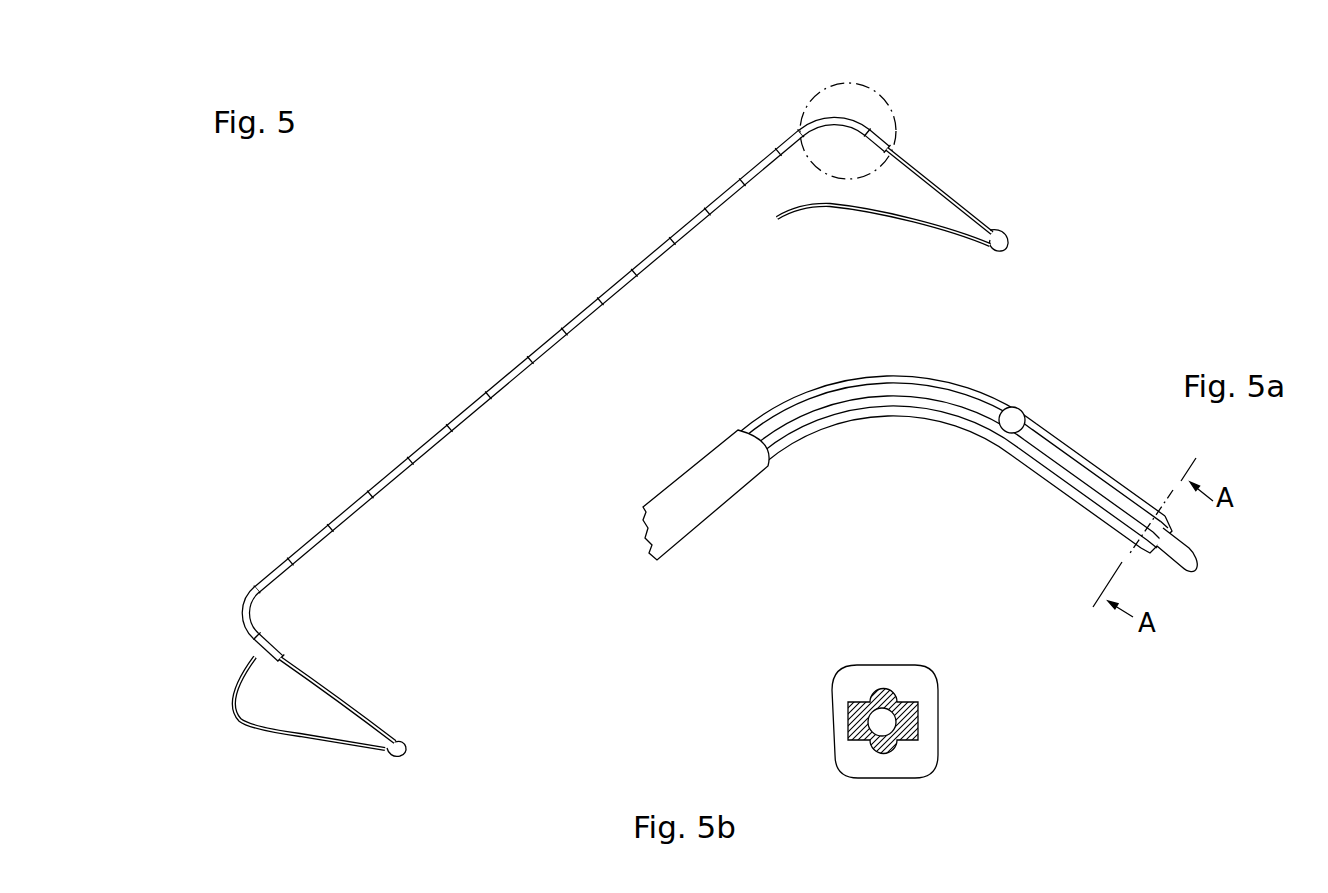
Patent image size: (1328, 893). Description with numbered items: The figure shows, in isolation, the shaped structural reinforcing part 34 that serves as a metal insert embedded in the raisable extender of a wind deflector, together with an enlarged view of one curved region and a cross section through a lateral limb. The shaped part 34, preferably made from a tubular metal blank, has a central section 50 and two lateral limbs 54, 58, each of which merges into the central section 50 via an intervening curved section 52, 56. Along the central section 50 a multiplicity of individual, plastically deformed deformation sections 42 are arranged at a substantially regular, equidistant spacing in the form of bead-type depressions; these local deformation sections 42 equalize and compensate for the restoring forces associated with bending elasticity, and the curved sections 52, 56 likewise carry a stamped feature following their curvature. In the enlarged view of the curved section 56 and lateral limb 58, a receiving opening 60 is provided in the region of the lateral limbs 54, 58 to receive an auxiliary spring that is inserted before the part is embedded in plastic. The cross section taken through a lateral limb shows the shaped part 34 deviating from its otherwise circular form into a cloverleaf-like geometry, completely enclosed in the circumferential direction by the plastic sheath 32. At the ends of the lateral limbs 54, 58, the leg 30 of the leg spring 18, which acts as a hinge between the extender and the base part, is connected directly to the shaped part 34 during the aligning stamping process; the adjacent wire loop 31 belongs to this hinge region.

In FIG. 5, the leg spring 18 is at (1005, 232).
In FIG. 5, the leg 30 is at (952, 198).
In FIG. 5A, the leg 30 is at (1187, 560).
In FIG. 5B, the leg 30 is at (890, 721).
In FIG. 5, the loop wire 31 is at (887, 217).
In FIG. 5B, the plastic sheath 32 is at (852, 755).
In FIG. 5, the shaped structural reinforcing part 34 is at (384, 338).
In FIG. 5B, the shaped structural reinforcing part 34 is at (849, 710).
In FIG. 5, the deformation sections 42 is at (677, 235).
In FIG. 5, the central section 50 is at (515, 370).
In FIG. 5, the curved section 52 is at (243, 603).
In FIG. 5, the lateral limb 54 is at (275, 645).
In FIG. 5, the curved section 56 is at (823, 118).
In FIG. 5A, the curved section 56 is at (868, 377).
In FIG. 5B, the curved section 56 is at (905, 640).
In FIG. 5, the lateral limb 58 is at (875, 133).
In FIG. 5A, the lateral limb 58 is at (1107, 483).
In FIG. 5A, the receiving opening 60 is at (1019, 410).